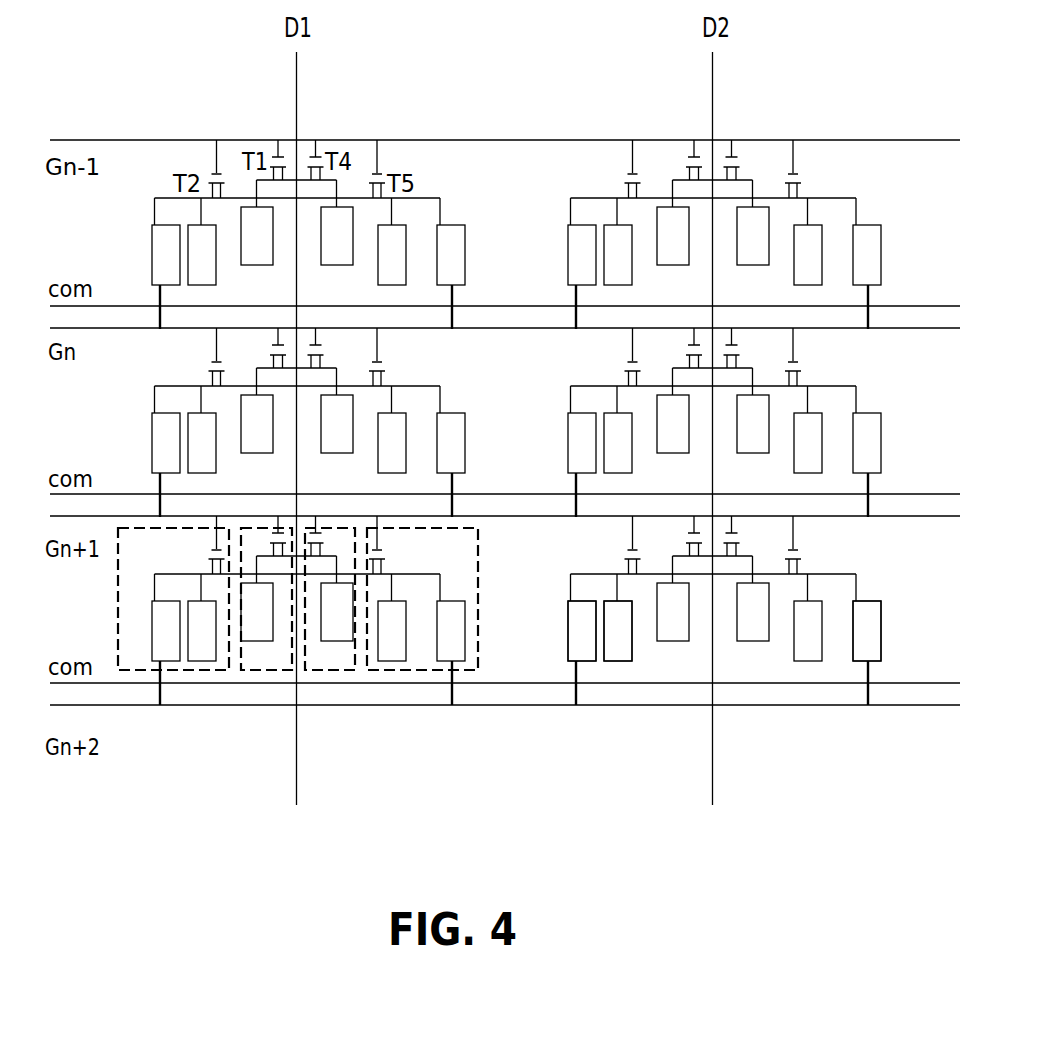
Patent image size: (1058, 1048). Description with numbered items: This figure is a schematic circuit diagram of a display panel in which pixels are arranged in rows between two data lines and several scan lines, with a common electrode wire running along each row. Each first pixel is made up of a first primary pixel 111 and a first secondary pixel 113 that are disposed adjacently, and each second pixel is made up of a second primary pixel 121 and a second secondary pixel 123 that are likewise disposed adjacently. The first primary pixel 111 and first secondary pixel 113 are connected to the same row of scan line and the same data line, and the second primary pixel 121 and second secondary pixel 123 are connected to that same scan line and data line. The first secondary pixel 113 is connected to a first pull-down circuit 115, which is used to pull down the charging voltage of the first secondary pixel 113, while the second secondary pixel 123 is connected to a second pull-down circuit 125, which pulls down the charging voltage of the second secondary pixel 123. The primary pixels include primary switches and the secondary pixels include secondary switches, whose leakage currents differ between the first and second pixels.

The first primary pixel 111 is at (253, 648).
The first secondary pixel 113 is at (137, 652).
The first pull-down circuit 115 is at (587, 647).
The second primary pixel 121 is at (328, 648).
The second secondary pixel 123 is at (423, 655).
The second pull-down circuit 125 is at (873, 647).